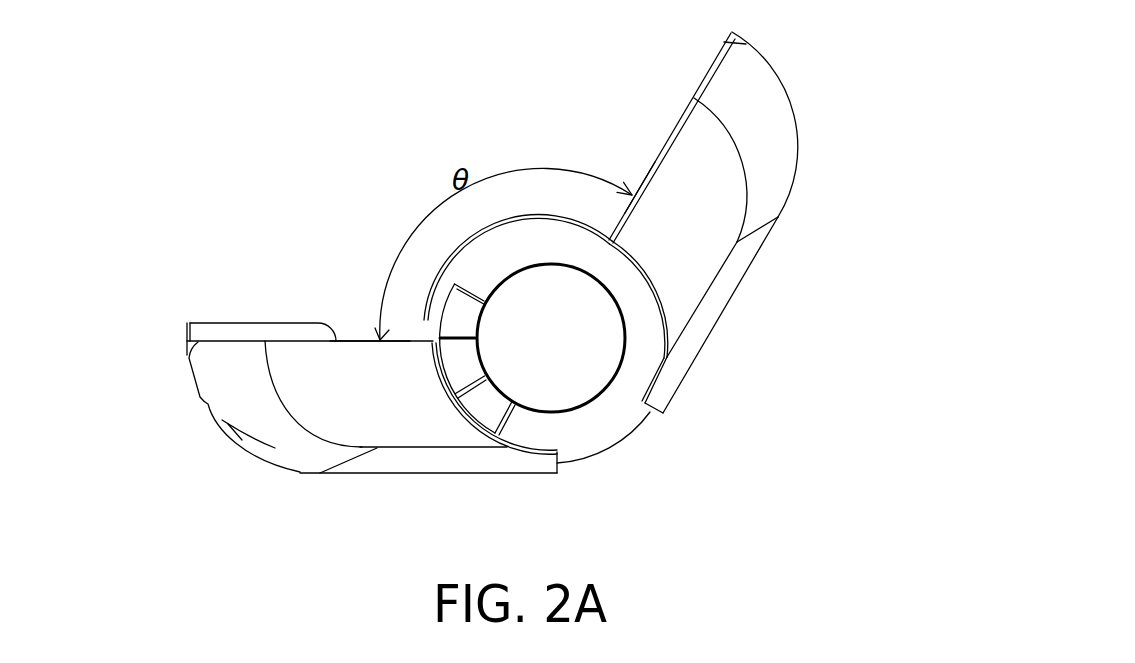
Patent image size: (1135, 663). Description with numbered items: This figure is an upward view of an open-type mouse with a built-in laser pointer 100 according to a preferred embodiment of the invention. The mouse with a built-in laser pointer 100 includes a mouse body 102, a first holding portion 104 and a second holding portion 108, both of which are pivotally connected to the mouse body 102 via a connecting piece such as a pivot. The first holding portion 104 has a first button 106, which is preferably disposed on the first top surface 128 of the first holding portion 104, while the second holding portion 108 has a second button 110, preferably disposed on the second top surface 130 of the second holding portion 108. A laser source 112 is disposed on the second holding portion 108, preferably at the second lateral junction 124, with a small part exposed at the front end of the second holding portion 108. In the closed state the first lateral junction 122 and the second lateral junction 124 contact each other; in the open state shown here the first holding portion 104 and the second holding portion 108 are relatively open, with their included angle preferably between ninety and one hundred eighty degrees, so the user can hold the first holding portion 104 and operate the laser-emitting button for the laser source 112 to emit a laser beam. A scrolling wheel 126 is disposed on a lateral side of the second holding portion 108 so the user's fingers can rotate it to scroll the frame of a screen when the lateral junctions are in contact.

The mouse with a built-in laser pointer 100 is at (935, 3).
The mouse body 102 is at (630, 450).
The first holding portion 104 is at (773, 52).
The first button 106 is at (718, 200).
The second holding portion 108 is at (170, 365).
The second button 110 is at (330, 410).
The laser source 112 is at (187, 327).
The first lateral junction 122 is at (636, 190).
The second lateral junction 124 is at (350, 340).
The scrolling wheel 126 is at (228, 444).
The first top surface 128 is at (777, 121).
The second top surface 130 is at (213, 377).